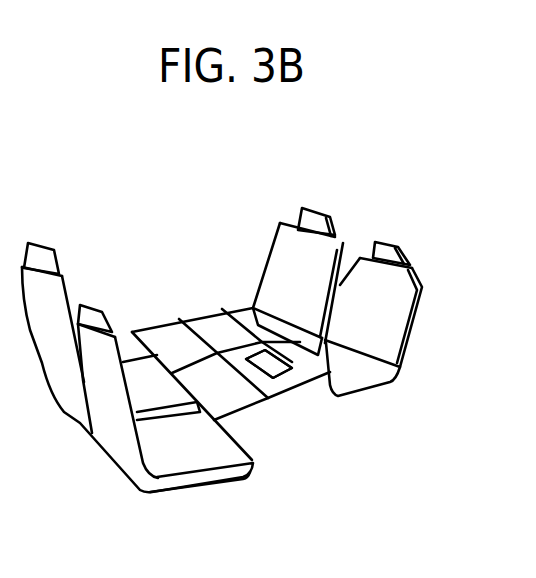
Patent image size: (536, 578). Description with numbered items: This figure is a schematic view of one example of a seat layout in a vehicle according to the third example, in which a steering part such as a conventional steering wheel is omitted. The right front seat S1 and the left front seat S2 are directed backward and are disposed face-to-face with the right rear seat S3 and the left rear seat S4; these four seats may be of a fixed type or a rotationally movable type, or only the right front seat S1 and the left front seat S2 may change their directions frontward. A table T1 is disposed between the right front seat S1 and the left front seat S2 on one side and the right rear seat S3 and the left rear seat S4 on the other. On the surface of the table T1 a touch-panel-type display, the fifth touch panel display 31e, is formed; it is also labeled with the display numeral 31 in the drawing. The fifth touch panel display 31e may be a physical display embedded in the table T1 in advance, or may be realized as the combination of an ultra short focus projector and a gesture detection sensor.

The right front seat S1 is at (390, 318).
The left front seat S2 is at (268, 257).
The right rear seat S3 is at (198, 463).
The left rear seat S4 is at (134, 370).
The table T1 is at (163, 322).
The fifth touch panel display 31e is at (282, 378).
The table portion 31 is at (280, 405).